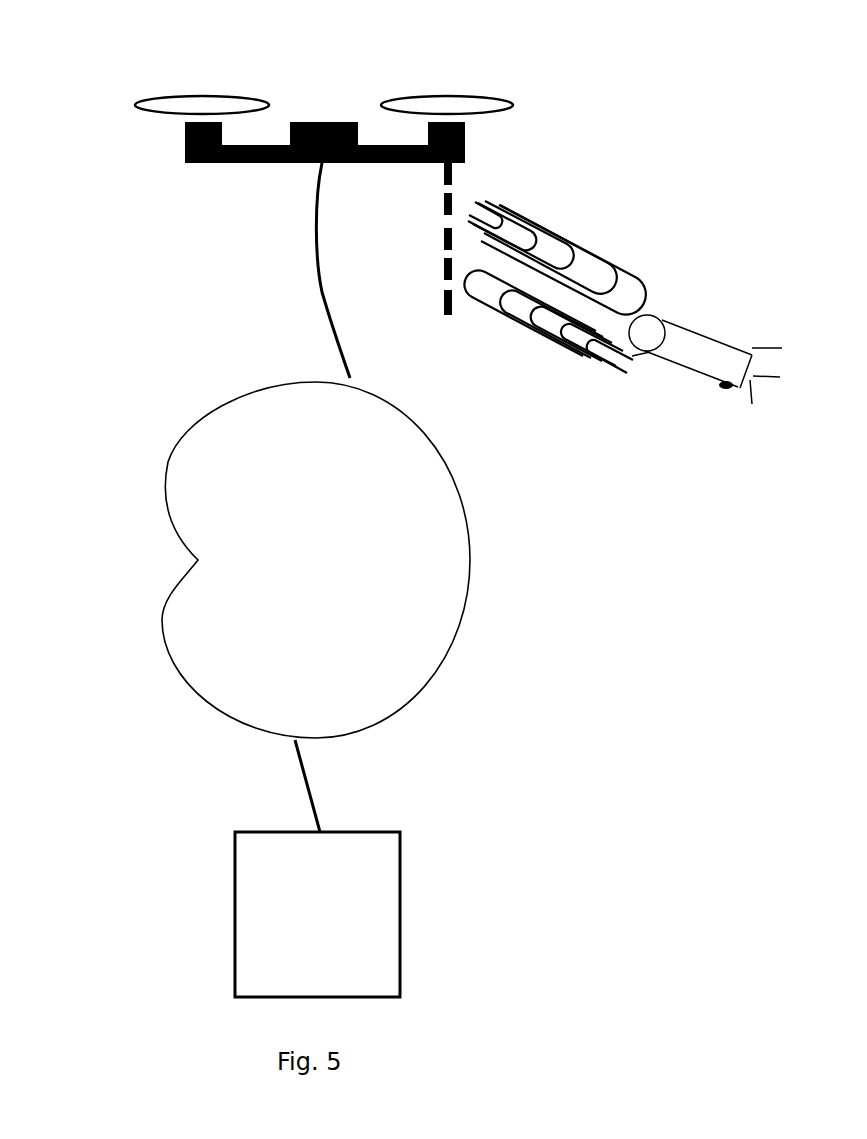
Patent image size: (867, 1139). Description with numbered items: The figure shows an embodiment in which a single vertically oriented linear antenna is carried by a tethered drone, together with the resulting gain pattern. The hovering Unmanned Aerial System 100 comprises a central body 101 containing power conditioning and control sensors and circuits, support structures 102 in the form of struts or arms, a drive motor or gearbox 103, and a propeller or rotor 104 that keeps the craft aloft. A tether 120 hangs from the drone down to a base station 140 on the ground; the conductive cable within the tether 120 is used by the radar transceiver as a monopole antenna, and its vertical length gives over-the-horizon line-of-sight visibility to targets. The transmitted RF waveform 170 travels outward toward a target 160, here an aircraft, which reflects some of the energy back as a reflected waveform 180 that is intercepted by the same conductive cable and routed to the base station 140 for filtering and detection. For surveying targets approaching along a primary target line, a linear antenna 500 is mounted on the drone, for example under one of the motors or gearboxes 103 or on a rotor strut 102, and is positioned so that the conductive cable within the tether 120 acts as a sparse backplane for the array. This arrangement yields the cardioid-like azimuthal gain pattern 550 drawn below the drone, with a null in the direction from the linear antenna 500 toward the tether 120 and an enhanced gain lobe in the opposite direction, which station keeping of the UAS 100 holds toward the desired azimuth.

The Unmanned Aerial System 100 is at (120, 65).
The central body 101 is at (327, 114).
The support structure 102 is at (256, 179).
The drive motor or gearbox 103 is at (477, 143).
The propeller or rotor 104 is at (449, 83).
The tether 120 is at (308, 497).
The base station 140 is at (338, 931).
The target 160 is at (711, 333).
The RF waveform 170 is at (557, 258).
The reflected waveform 180 is at (548, 333).
The linear antenna 500 is at (429, 305).
The antenna gain pattern 550 is at (479, 577).